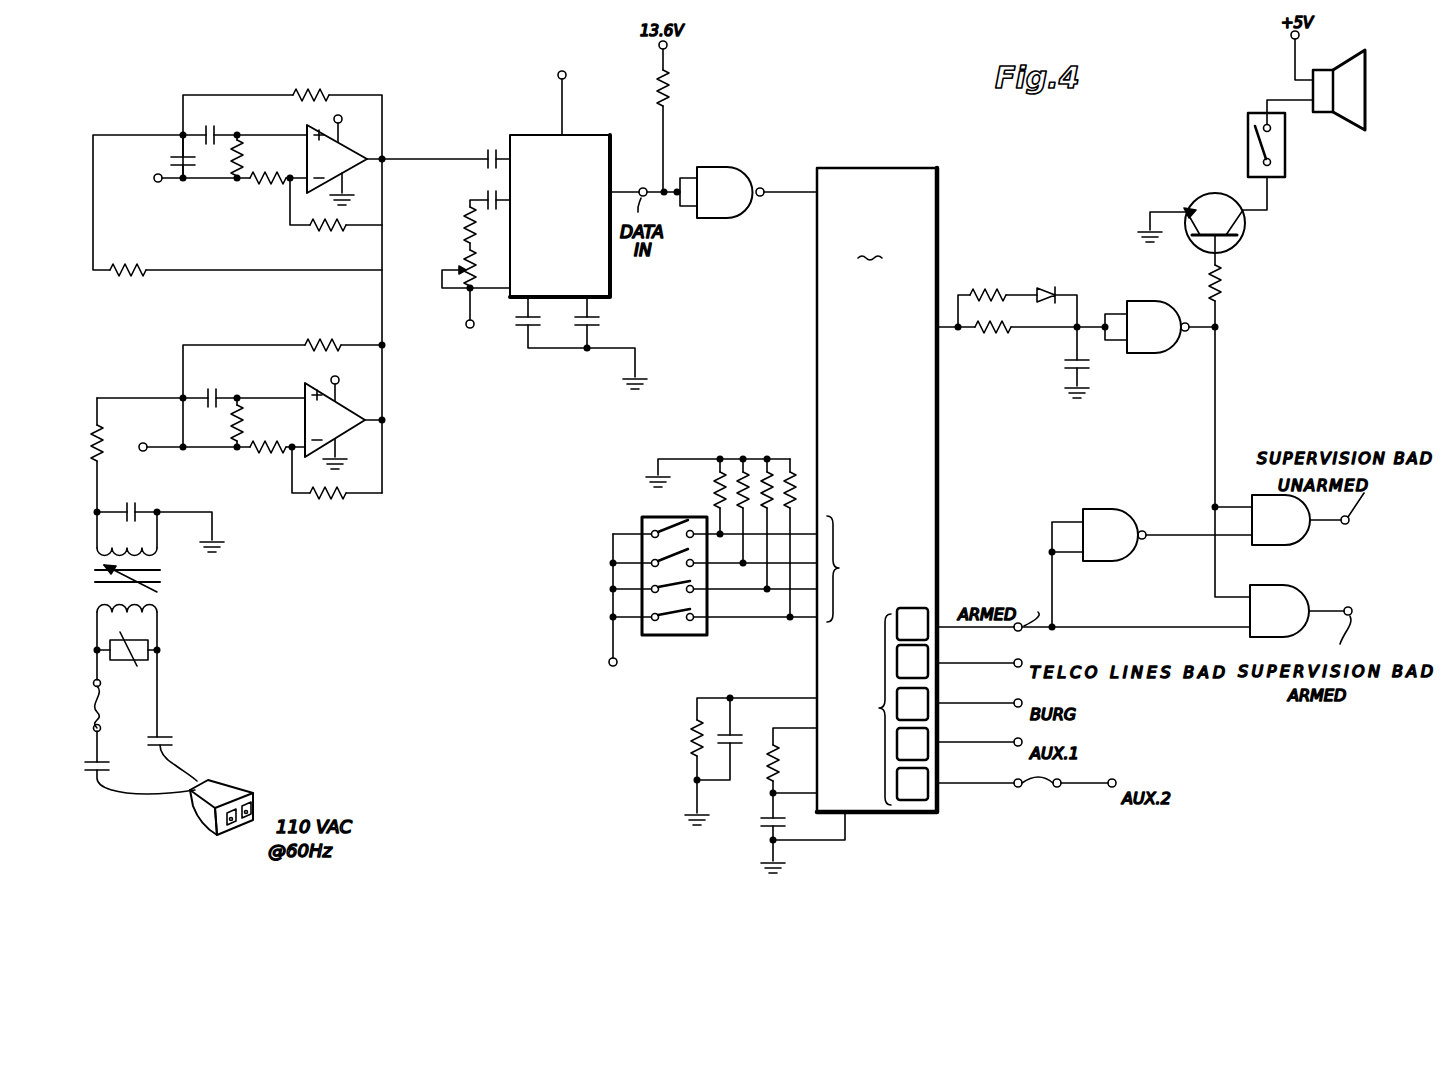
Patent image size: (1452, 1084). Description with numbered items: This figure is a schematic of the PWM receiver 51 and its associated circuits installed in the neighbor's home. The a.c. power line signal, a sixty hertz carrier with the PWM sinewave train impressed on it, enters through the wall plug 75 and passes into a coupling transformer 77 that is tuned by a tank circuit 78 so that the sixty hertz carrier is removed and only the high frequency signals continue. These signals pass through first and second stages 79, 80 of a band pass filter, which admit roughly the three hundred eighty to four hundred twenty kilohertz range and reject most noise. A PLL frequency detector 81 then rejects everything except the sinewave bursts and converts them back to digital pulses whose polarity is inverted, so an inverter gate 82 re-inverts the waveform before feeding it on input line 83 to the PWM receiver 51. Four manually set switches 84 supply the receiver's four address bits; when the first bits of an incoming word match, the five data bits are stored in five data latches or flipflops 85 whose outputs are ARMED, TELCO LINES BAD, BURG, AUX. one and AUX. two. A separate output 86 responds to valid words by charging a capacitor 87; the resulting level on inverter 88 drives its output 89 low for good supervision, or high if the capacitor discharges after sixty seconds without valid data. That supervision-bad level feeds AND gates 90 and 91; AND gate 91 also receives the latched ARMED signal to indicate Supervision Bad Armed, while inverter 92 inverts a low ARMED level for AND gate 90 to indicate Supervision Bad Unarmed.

The PWM receiver 51 is at (877, 490).
The wall plug 75 is at (234, 760).
The coupling transformer 77 is at (84, 578).
The tank circuit 78 is at (108, 540).
The first stage of band pass filter 79 is at (306, 396).
The second stage of band pass filter 80 is at (283, 184).
The PLL frequency detector 81 is at (573, 147).
The inverter gate 82 is at (728, 218).
The input line 83 is at (767, 186).
The switches 84 is at (638, 522).
The data latches or flipflops 85 is at (875, 706).
The output 86 is at (946, 330).
The capacitor 87 is at (1061, 363).
The inverter 88 is at (1144, 302).
The output 89 is at (1198, 335).
The AND gate 90 is at (1258, 499).
The AND gate 91 is at (1272, 568).
The inverter 92 is at (1105, 512).